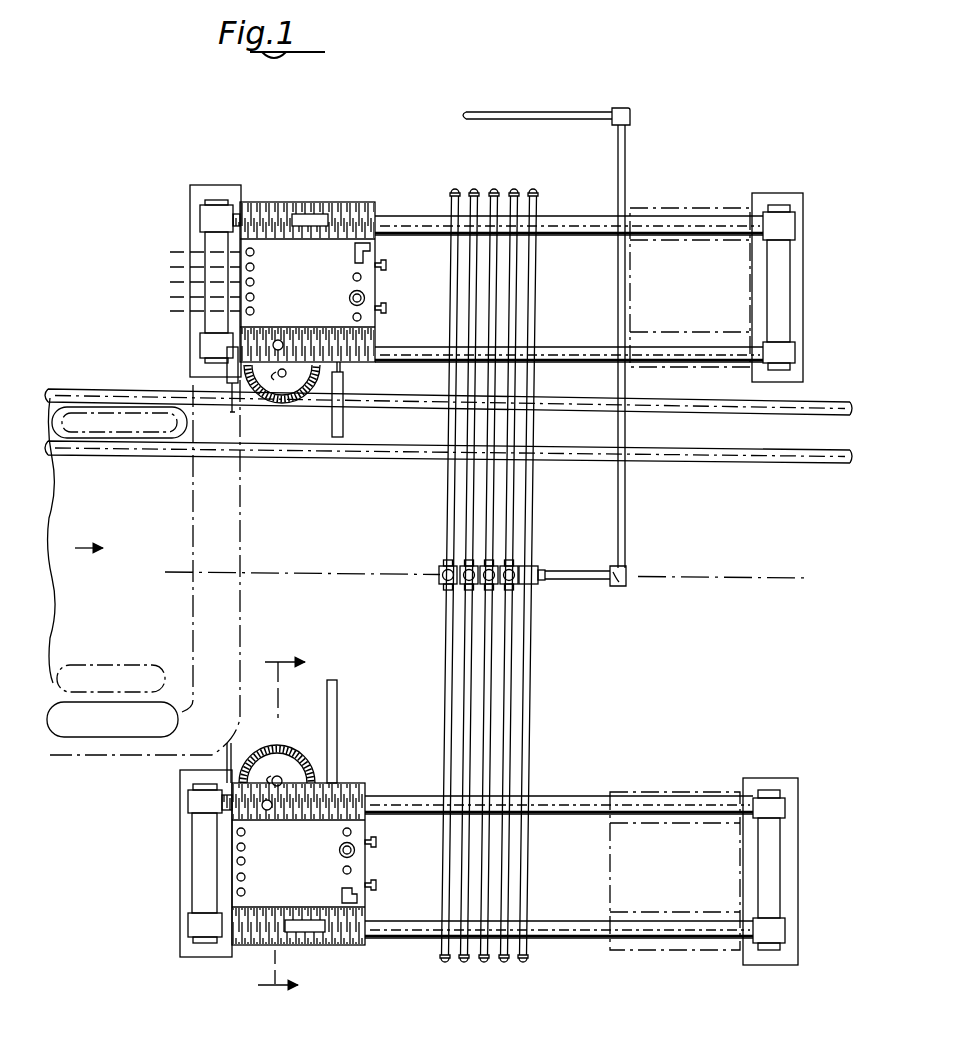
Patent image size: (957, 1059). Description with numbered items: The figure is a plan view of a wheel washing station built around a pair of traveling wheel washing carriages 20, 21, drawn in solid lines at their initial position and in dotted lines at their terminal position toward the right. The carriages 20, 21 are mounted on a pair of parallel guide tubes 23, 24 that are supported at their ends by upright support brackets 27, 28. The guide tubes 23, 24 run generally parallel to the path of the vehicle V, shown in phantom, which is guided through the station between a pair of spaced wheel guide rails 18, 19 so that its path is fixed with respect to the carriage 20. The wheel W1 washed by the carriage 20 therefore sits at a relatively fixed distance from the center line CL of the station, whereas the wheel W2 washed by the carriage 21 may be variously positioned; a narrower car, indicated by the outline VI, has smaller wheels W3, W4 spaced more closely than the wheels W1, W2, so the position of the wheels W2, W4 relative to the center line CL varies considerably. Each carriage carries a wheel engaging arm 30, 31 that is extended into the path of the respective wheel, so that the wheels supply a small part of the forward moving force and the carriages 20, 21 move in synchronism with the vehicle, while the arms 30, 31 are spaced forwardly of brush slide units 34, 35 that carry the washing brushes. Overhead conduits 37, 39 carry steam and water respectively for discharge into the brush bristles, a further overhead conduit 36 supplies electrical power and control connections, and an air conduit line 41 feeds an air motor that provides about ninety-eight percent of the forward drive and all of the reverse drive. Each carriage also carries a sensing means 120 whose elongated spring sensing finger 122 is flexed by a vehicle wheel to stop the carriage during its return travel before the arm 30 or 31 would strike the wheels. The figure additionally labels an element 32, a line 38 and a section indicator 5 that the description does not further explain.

The wheel guide rail 18 is at (723, 406).
The wheel guide rail 19 is at (728, 458).
The wheel washing carriage 20 is at (306, 200).
The wheel washing carriage 21 is at (650, 788).
The guide tube 23 is at (573, 215).
The guide tube 24 is at (556, 346).
The upright support bracket 27 is at (214, 220).
The upright support bracket 28 is at (790, 226).
The wheel engaging arm 30 is at (343, 430).
The wheel engaging arm 31 is at (337, 690).
The cutter spindle 32 is at (280, 577).
The brush slide unit 34 is at (282, 408).
The brush slide unit 35 is at (300, 744).
The overhead conduit 36 is at (446, 668).
The overhead conduit 37 is at (464, 724).
The third control rod 38 is at (490, 654).
The overhead conduit 39 is at (508, 688).
The air conduit line 41 is at (528, 736).
The sensing means 120 is at (222, 366).
The sensing finger 122 is at (232, 414).
The wheel W1 is at (70, 440).
The wheel W2 is at (89, 737).
The smaller wheel W3 is at (162, 432).
The smaller wheel W4 is at (75, 668).
The vehicle V is at (242, 527).
The narrower vehicle outline VI is at (193, 604).
The center line CL is at (760, 576).
The section line 5- 5 is at (281, 825).